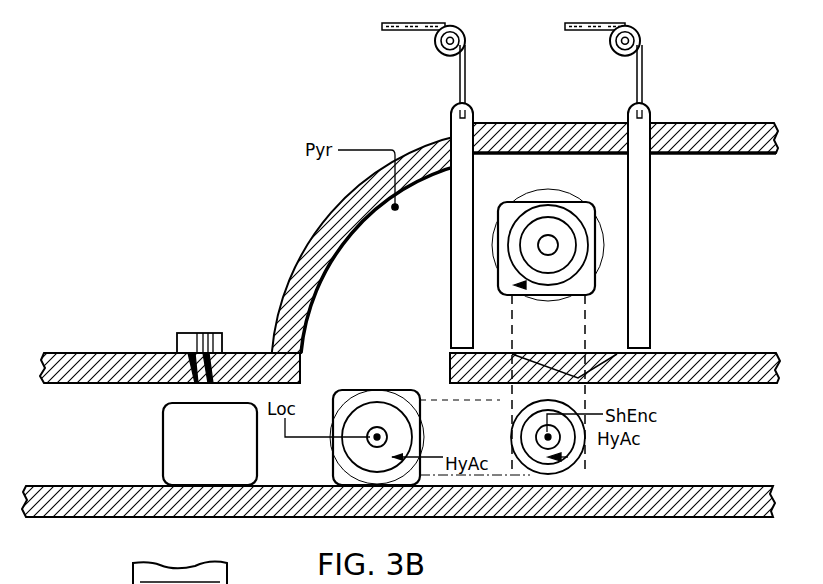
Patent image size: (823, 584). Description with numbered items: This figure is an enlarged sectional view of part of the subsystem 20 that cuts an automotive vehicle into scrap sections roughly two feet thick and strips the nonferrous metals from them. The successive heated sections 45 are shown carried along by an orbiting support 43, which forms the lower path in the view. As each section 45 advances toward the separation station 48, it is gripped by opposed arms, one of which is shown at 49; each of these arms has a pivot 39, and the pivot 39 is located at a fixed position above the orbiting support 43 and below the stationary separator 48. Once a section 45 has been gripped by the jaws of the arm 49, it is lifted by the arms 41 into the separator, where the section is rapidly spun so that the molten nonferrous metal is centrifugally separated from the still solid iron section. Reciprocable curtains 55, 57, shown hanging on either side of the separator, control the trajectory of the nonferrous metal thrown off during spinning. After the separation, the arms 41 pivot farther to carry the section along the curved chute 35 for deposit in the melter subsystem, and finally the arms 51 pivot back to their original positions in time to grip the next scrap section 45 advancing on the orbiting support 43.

The subsystem 20 is at (180, 173).
The chute 35 is at (356, 263).
The pivot 39 is at (536, 437).
The arms 41 is at (462, 400).
The orbiting support 43 is at (128, 513).
The scrap section 45 is at (590, 217).
The separation station 48 is at (257, 126).
The opposed arm 49 is at (392, 418).
The arms 51 is at (568, 440).
The reciprocable curtain 55 is at (474, 185).
The reciprocable curtain 57 is at (651, 190).